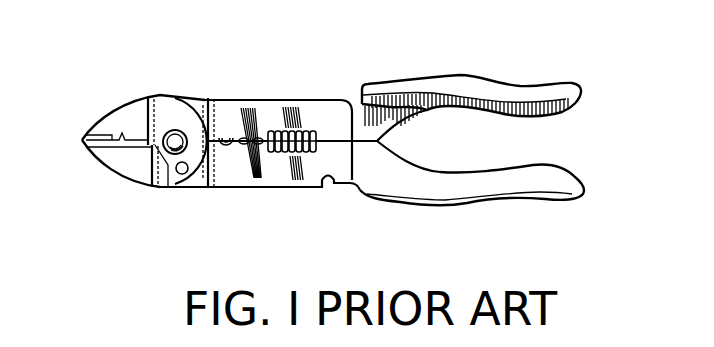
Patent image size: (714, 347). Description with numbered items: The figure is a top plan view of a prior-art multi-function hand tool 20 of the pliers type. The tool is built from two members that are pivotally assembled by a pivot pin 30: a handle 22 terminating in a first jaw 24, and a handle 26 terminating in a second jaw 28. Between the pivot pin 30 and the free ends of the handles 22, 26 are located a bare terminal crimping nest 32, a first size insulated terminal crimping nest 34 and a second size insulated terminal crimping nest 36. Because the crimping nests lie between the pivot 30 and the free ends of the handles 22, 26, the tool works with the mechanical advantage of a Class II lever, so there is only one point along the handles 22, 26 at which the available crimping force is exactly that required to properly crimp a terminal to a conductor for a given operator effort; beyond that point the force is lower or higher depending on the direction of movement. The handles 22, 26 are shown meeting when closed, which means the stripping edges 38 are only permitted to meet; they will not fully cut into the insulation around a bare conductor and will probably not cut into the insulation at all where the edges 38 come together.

The multi-function hand tool 20 is at (463, 150).
The handle 22 is at (562, 187).
The first jaw 24 is at (122, 118).
The handle 26 is at (487, 94).
The second jaw 28 is at (122, 163).
The pivot pin 30 is at (174, 134).
The bare terminal crimping nest 32 is at (225, 137).
The first size insulated terminal crimping nest 34 is at (245, 138).
The second size insulated terminal crimping nest 36 is at (290, 137).
The stripping edges 38 is at (320, 100).